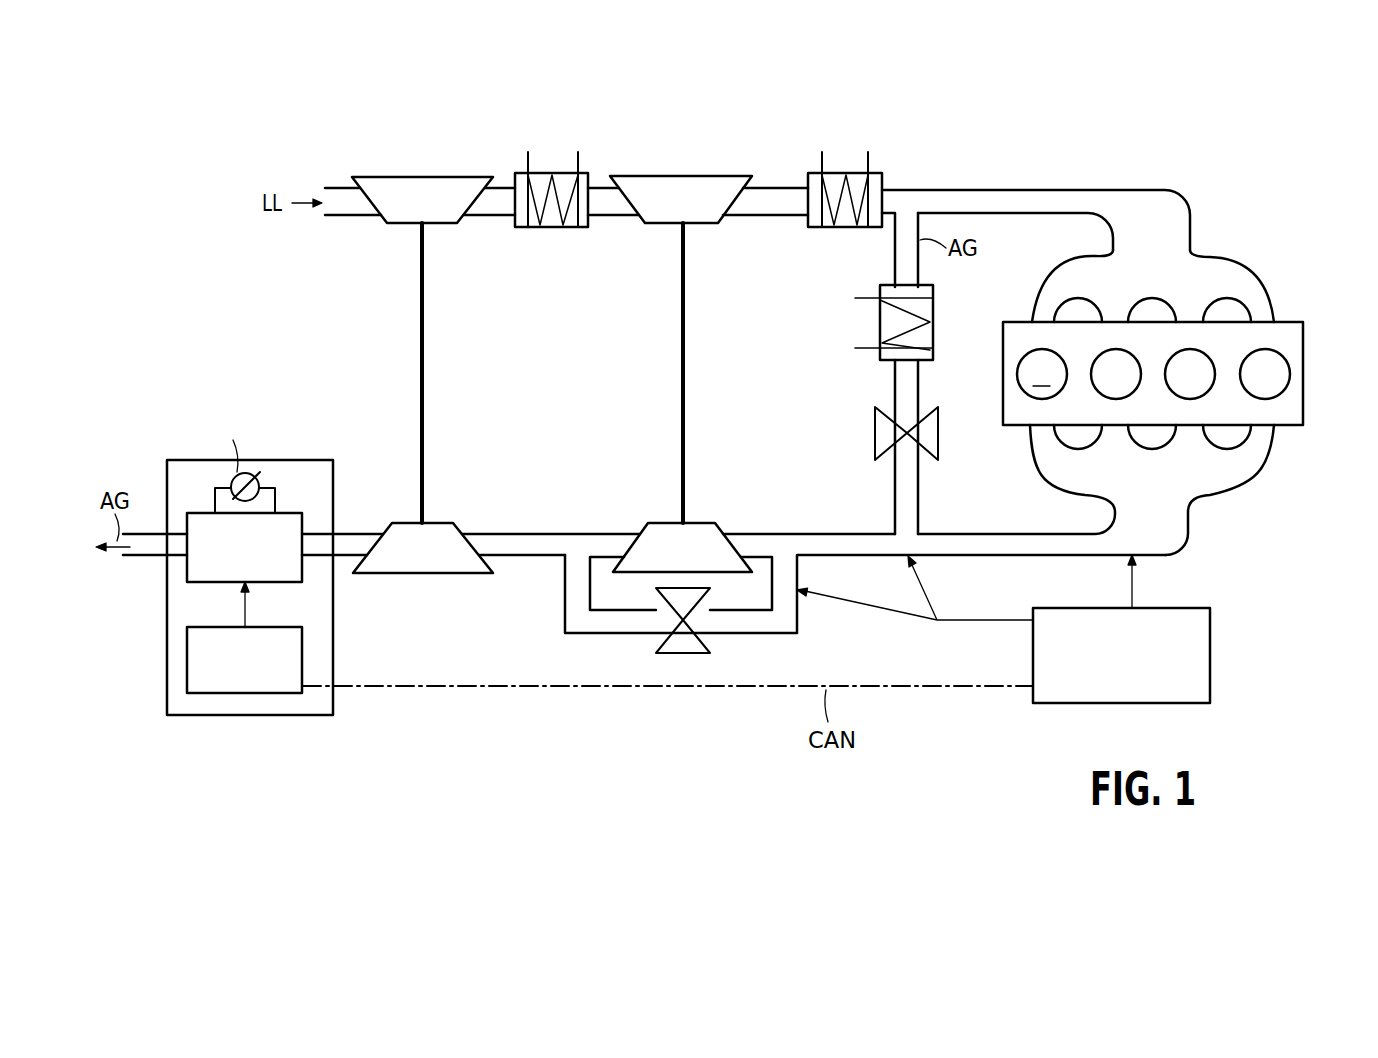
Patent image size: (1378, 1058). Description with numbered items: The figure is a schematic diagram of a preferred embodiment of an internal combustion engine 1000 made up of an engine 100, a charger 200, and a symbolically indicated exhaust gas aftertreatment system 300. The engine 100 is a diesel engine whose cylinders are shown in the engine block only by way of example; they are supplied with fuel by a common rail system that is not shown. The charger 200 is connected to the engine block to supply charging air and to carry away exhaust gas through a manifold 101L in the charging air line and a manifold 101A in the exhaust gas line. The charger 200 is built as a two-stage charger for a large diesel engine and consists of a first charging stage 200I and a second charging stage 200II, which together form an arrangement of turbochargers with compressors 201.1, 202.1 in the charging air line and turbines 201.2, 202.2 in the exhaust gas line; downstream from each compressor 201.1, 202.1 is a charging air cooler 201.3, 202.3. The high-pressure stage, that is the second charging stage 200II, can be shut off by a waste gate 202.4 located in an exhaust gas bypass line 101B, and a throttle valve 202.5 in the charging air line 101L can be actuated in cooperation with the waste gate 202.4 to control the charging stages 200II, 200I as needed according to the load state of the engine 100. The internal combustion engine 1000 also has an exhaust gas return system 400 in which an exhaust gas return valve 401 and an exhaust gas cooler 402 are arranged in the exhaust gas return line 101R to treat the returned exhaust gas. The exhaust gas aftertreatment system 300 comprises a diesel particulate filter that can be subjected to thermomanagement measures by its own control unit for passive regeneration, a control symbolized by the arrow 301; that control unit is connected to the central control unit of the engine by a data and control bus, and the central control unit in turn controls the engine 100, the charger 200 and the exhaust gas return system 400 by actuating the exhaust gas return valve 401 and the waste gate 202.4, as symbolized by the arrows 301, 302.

The internal combustion engine 1000 is at (1221, 129).
The engine 100 is at (1220, 245).
The charging air line manifold 101L is at (1275, 290).
The exhaust gas line manifold 101A is at (1262, 468).
The exhaust gas return line 101R is at (918, 383).
The exhaust gas bypass line 101B is at (790, 622).
The charger 200 is at (579, 303).
The first charging stage 200I is at (408, 368).
The second charging stage 200II is at (664, 368).
The compressor 201.1 is at (442, 215).
The turbine 201.2 is at (452, 520).
The charging air cooler 201.3 is at (556, 172).
The compressor 202.1 is at (708, 215).
The turbine 202.2 is at (660, 520).
The charging air cooler 202.3 is at (845, 172).
The waste gate 202.4 is at (688, 648).
The throttle valve 202.5 is at (774, 207).
The exhaust gas aftertreatment system 300 is at (180, 718).
The arrow 301 is at (250, 605).
The arrow 302 is at (905, 600).
The exhaust gas return system 400 is at (848, 388).
The exhaust gas return valve 401 is at (937, 436).
The exhaust gas cooler 402 is at (932, 290).